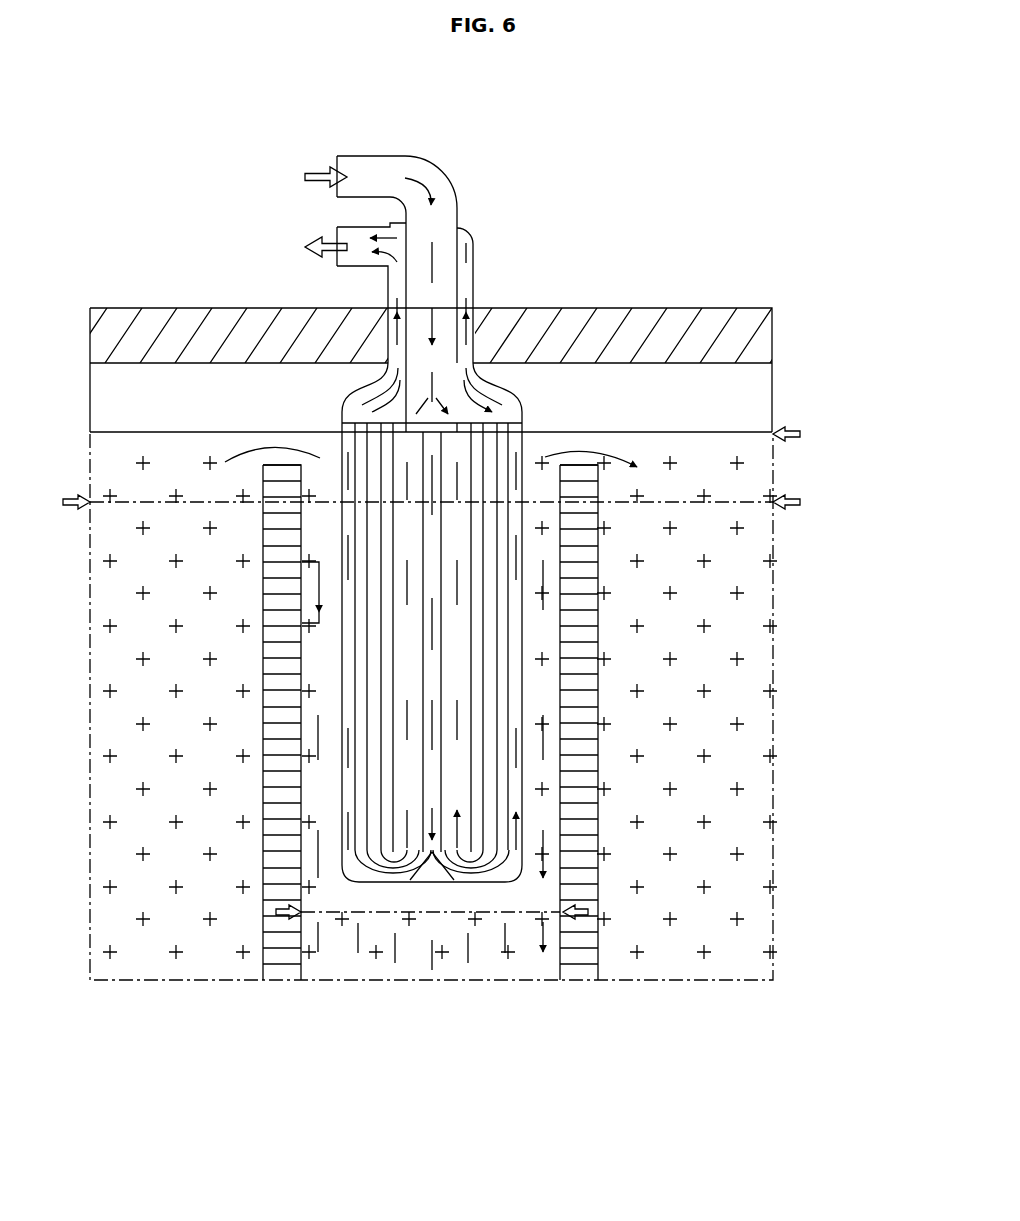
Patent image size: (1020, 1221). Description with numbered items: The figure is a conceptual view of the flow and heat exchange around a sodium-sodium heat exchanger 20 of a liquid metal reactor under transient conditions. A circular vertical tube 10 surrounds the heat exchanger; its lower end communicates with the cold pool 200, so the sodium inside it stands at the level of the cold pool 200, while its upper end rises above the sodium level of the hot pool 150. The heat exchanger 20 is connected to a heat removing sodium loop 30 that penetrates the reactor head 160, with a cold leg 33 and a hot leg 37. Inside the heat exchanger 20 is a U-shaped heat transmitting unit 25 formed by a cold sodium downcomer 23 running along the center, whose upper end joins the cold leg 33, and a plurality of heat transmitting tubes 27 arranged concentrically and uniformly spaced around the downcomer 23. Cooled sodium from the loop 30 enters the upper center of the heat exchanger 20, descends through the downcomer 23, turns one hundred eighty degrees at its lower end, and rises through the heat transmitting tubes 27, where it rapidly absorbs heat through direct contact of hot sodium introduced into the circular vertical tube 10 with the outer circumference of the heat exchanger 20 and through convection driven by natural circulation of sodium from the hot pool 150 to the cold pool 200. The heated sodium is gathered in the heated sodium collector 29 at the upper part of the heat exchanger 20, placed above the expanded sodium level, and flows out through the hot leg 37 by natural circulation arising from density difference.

The circular vertical tube 10 is at (586, 585).
The sodium-sodium heat exchanger 20 is at (526, 668).
The cold sodium downcomer 23 is at (428, 510).
The U-shaped heat transmitting unit 25 is at (566, 236).
The heat transmitting tubes 27 is at (514, 497).
The heated sodium collector 29 is at (372, 386).
The heat removing sodium loop 30 is at (495, 76).
The cold leg 33 is at (436, 165).
The hot leg 37 is at (473, 230).
The hot pool 150 is at (716, 808).
The reactor head 160 is at (694, 343).
The cold pool 200 is at (450, 967).